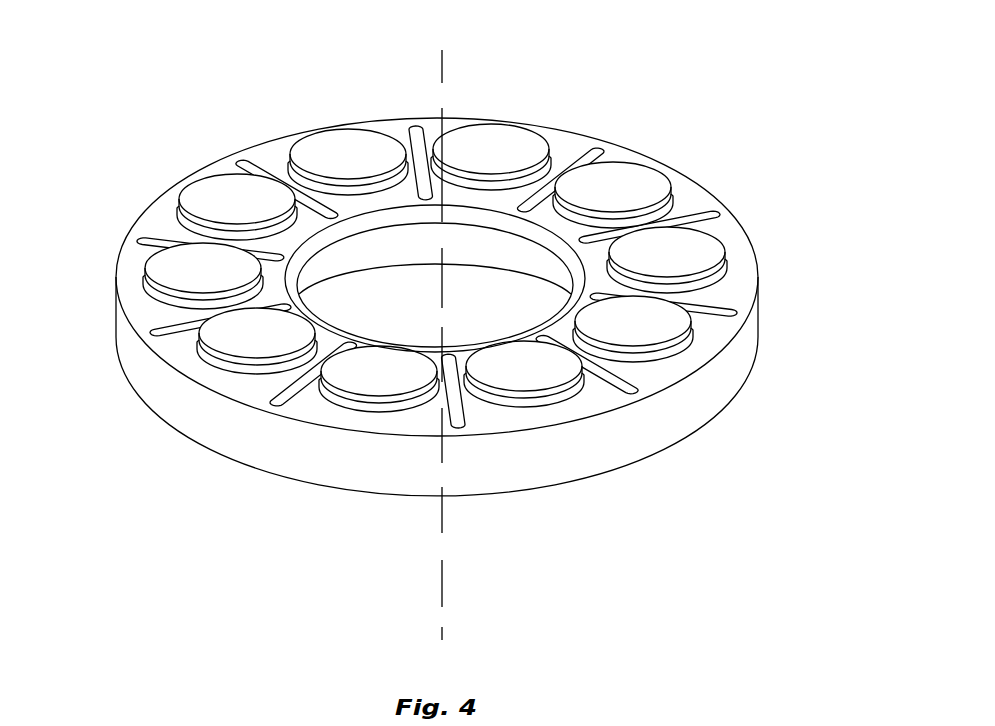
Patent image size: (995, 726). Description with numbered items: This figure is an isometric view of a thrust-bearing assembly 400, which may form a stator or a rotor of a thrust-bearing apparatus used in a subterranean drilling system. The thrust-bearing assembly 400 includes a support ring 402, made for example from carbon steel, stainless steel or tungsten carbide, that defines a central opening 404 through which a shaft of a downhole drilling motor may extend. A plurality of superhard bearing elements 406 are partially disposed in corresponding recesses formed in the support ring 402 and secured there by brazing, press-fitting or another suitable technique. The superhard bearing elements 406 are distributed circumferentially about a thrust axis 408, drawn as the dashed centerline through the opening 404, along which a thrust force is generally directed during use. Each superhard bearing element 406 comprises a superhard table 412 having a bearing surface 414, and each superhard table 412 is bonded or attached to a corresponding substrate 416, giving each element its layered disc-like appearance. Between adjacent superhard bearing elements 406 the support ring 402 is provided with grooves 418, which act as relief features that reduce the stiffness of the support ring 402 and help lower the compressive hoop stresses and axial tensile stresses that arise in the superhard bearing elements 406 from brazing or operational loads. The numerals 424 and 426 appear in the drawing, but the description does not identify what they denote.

The thrust-bearing assembly 400 is at (448, 329).
The support ring 402 is at (470, 307).
The opening 404 is at (355, 323).
The superhard bearing elements 406 is at (157, 243).
The thrust axis 408 is at (443, 82).
The superhard table 412 is at (445, 275).
The bearing surface 414 is at (162, 265).
The substrate 416 is at (158, 303).
The grooves 418 is at (153, 333).
The central bore 424 is at (358, 252).
The outer edge 426 is at (662, 425).